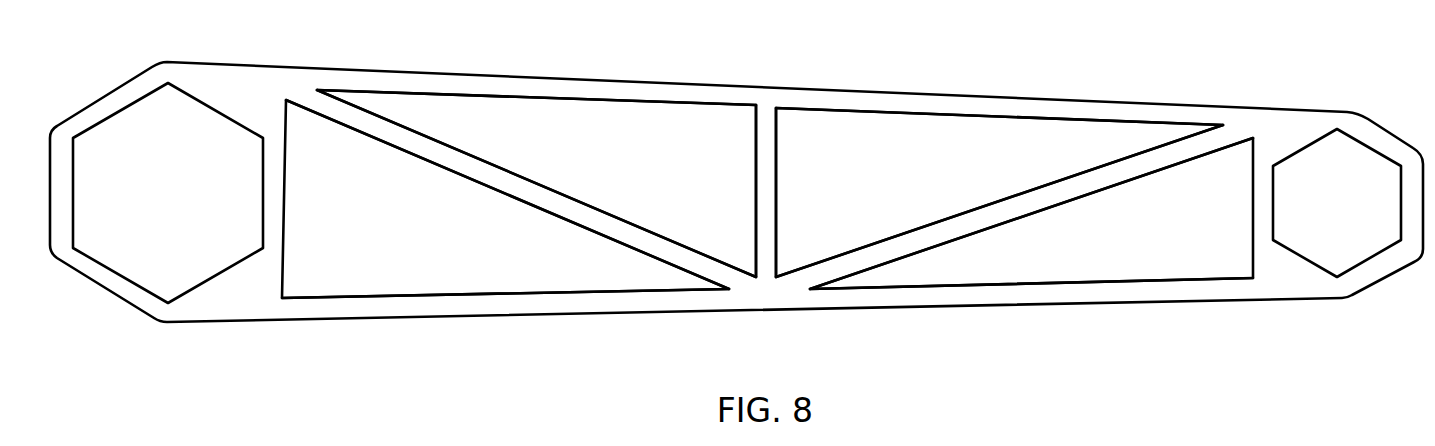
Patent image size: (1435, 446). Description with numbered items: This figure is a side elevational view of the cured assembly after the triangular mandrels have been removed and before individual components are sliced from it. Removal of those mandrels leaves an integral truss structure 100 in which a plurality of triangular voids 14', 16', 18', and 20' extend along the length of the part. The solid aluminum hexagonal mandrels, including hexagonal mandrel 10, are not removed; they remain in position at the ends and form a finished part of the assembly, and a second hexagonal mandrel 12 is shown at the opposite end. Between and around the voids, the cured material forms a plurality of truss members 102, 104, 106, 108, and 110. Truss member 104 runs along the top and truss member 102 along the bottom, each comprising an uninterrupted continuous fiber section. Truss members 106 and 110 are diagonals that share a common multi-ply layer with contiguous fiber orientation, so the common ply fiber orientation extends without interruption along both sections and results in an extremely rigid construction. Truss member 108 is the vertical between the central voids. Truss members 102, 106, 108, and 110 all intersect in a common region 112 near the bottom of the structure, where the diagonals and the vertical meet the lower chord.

The integral truss structure 100 is at (567, 328).
The hexagonal mandrel 10 is at (156, 283).
The right hexagonal opening 12 is at (1362, 232).
The triangular void 14' is at (505, 199).
The triangular void 16' is at (536, 183).
The triangular void 18' is at (999, 192).
The triangular void 20' is at (1031, 213).
The truss member 102 is at (429, 305).
The truss member 104 is at (773, 98).
The truss member 106 is at (587, 233).
The truss member 108 is at (762, 213).
The truss member 110 is at (1030, 190).
The common region 112 is at (767, 287).